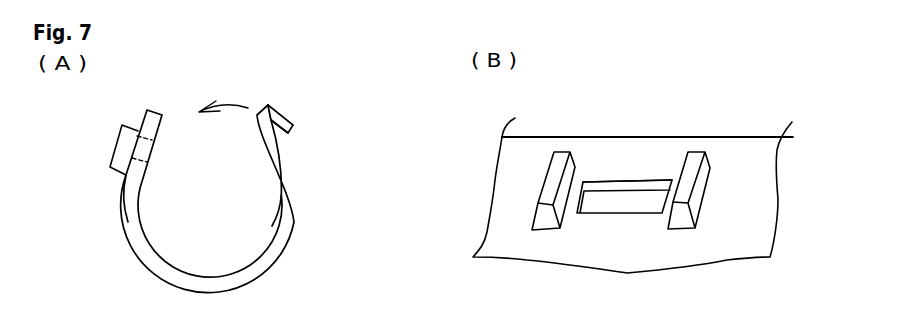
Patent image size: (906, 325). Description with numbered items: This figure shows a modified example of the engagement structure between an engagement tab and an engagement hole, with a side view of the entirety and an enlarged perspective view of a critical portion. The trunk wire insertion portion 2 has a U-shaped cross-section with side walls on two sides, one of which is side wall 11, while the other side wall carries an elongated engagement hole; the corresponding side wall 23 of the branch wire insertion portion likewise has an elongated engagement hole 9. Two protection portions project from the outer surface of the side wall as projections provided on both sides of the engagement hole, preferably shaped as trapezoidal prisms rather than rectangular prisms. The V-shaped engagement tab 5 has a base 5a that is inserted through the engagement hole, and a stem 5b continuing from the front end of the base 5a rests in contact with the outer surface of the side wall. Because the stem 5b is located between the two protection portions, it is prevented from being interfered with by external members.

The trunk wire insertion portion 2 is at (282, 258).
The engagement tab 5 is at (338, 70).
The base 5a is at (278, 113).
The stem 5b is at (293, 123).
The engagement hole 9 is at (627, 133).
The side wall 11 is at (291, 208).
The side wall 23 is at (752, 153).